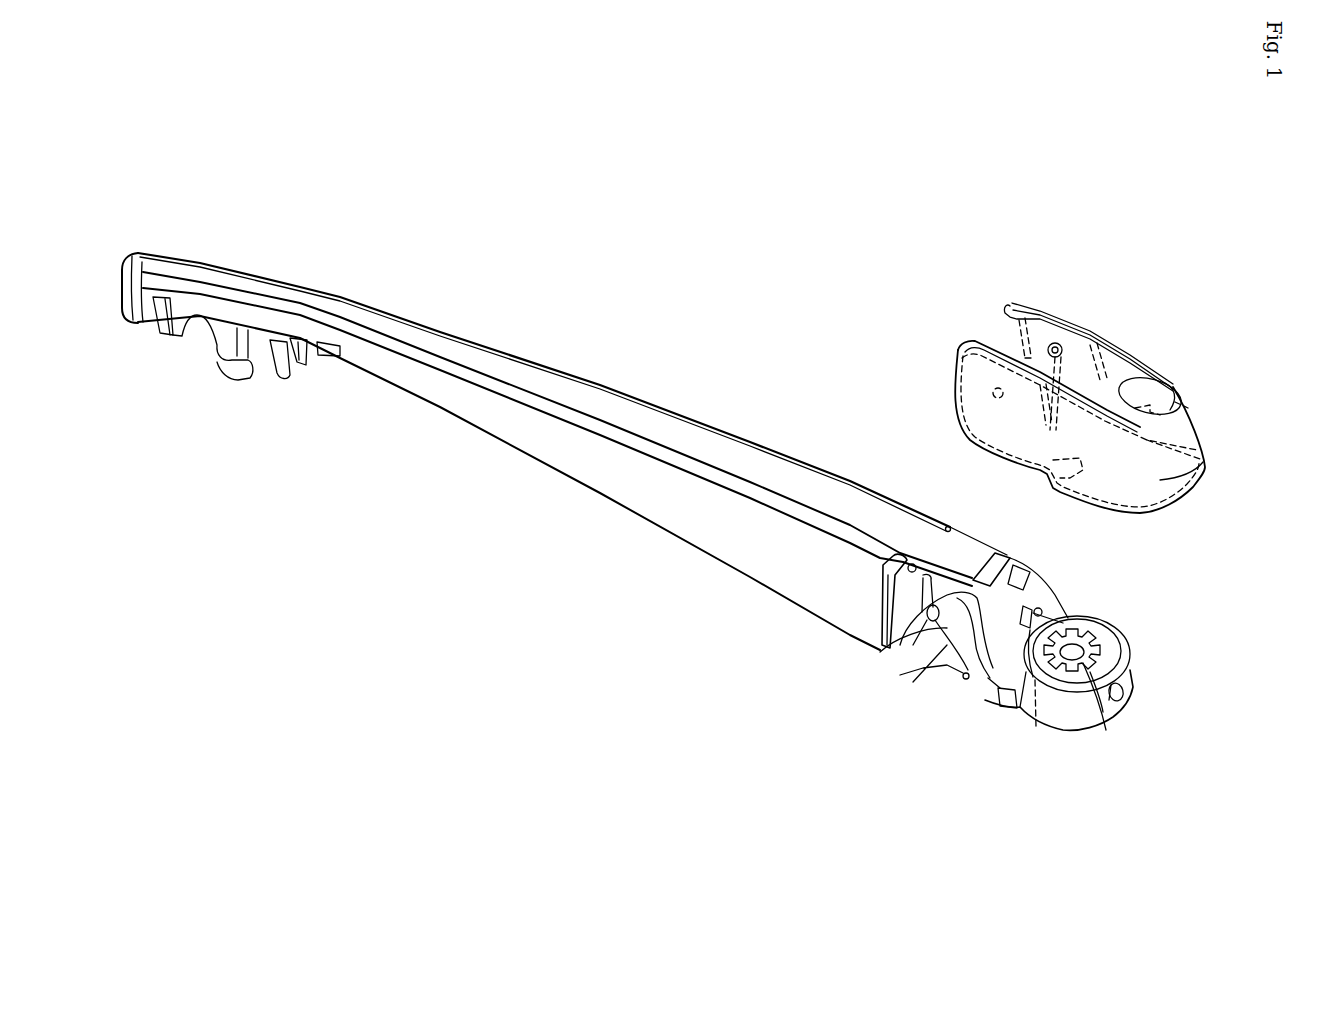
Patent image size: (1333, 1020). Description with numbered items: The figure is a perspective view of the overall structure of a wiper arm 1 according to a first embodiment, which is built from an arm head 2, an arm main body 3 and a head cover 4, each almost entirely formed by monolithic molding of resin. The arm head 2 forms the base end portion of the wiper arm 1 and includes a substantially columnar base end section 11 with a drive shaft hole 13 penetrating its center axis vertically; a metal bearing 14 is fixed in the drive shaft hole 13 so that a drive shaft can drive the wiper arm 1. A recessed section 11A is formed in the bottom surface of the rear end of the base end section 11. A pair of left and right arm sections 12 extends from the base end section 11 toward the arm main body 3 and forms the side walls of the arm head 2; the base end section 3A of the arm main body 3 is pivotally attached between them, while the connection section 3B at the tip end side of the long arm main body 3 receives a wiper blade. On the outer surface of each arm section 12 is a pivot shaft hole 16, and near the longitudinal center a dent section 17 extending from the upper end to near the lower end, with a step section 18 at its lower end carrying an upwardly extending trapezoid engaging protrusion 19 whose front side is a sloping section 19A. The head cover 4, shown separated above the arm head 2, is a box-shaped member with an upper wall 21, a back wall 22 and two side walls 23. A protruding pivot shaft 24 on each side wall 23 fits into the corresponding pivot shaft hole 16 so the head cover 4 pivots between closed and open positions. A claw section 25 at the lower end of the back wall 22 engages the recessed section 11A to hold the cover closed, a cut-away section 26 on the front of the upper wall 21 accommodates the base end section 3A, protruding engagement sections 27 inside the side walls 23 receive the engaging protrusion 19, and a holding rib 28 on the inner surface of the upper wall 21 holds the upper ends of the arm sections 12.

The wiper arm 1 is at (782, 312).
The arm head 2 is at (1118, 621).
The arm main body 3 is at (546, 364).
The base end section 3A is at (972, 553).
The connection section 3B is at (225, 352).
The head cover 4 is at (1140, 356).
The base end section 11 is at (1072, 707).
The recessed section 11A is at (1128, 711).
The arm sections 12 is at (1035, 583).
The drive shaft hole 13 is at (1100, 665).
The bearing 14 is at (1106, 730).
The pivot shaft hole 16 is at (875, 641).
The dent section 17 is at (1003, 665).
The step section 18 is at (1037, 728).
The engaging protrusion 19 is at (1008, 708).
The sloping section 19A is at (997, 693).
The upper wall 21 is at (1148, 386).
The back wall 22 is at (1180, 465).
The side walls 23 is at (1030, 347).
The pivot shaft 24 is at (1053, 343).
The claw section 25 is at (1168, 512).
The cut-away section 26 is at (970, 347).
The protruding engagement section 27 is at (1190, 404).
The holding rib 28 is at (1097, 340).